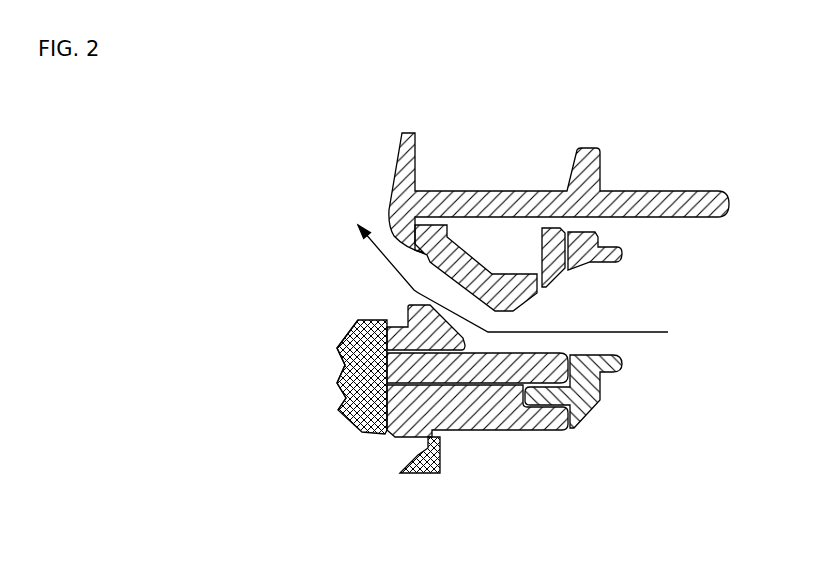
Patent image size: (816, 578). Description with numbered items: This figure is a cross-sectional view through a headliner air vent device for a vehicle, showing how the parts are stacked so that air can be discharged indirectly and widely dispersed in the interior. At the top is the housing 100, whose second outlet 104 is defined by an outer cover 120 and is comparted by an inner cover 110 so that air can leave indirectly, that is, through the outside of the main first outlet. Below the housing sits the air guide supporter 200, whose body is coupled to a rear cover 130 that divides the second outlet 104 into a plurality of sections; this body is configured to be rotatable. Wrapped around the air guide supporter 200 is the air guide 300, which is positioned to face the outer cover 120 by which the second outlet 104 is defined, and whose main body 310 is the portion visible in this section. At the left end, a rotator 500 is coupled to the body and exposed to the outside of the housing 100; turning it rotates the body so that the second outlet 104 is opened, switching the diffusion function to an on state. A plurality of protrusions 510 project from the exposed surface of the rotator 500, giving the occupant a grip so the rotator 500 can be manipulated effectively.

The housing 100 is at (404, 157).
The outer cover 120 is at (456, 263).
The second outlet 104 is at (466, 308).
The air guide 300 is at (360, 301).
The main body 310 is at (399, 328).
The air guide supporter 200 is at (455, 365).
The inner cover 110 is at (506, 406).
The rear cover 130 is at (590, 399).
The rotator 500 is at (360, 428).
The protrusions 510 is at (338, 390).